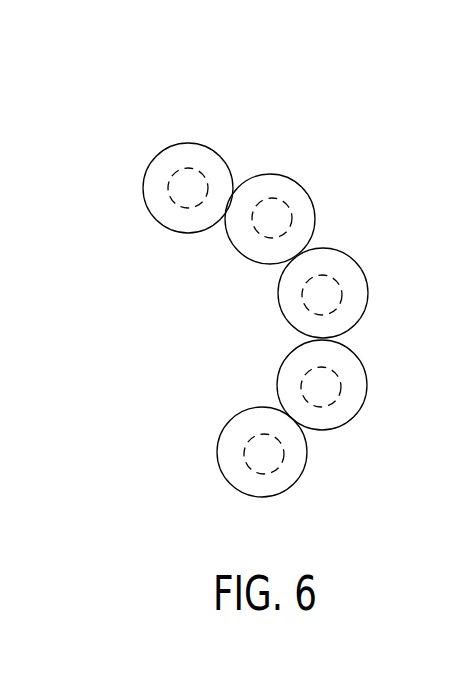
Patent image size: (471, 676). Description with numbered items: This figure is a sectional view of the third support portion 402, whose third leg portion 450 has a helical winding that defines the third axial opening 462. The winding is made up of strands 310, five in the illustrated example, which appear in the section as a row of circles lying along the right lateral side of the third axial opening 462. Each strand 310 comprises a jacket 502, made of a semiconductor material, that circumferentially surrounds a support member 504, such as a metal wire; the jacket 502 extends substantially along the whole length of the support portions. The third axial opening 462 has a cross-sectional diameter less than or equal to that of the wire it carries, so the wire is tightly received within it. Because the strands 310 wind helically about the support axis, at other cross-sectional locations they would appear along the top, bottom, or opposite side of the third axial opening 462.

The third support portion 402 is at (380, 121).
The third axial opening 462 is at (128, 263).
The strands 310 is at (220, 157).
The jacket 502 is at (178, 162).
The support member 504 is at (170, 182).
The third leg portion 450 is at (355, 262).